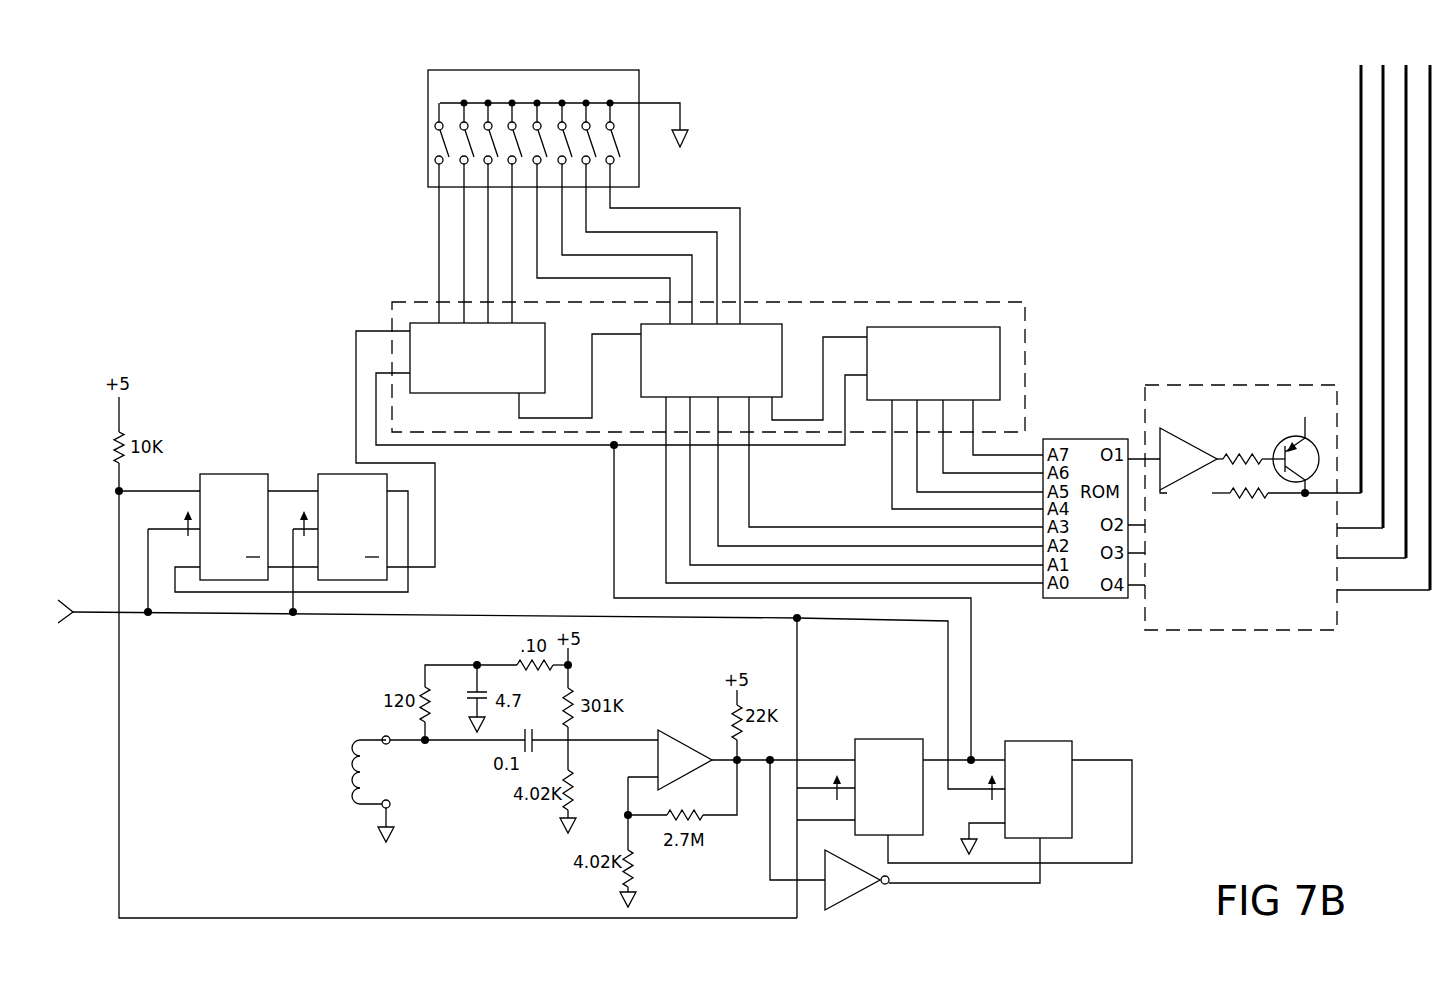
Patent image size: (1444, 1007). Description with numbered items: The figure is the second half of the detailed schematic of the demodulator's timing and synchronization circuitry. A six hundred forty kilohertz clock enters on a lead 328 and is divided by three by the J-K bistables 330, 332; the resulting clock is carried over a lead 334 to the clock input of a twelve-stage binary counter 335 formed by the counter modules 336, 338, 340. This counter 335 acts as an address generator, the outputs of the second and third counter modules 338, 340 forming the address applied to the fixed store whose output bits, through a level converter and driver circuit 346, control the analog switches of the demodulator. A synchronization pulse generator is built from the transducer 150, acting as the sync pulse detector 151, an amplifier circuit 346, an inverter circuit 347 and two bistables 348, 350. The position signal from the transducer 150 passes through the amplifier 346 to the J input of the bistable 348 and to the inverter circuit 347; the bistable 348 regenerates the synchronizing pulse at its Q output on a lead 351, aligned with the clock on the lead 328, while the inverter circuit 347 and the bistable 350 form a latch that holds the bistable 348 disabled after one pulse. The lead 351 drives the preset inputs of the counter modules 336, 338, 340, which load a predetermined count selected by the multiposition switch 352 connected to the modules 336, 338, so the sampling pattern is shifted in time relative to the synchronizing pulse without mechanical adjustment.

The transducer 150 is at (358, 742).
The sync pulse detector 151 is at (722, 897).
The lead 328 is at (100, 612).
The J-K bistable 330 is at (235, 474).
The J-K bistable 332 is at (335, 474).
The lead 334 is at (356, 380).
The 12-stage binary counter 335 is at (392, 318).
The first counter module 336 is at (413, 322).
The second counter module 338 is at (762, 323).
The third counter module 340 is at (980, 327).
The amplifier circuit 346 is at (1185, 385).
The inverter circuit 347 is at (845, 897).
The bistable 348 is at (893, 739).
The bistable 350 is at (1048, 741).
The lead 351 is at (971, 655).
The multiposition switch 352 is at (428, 133).